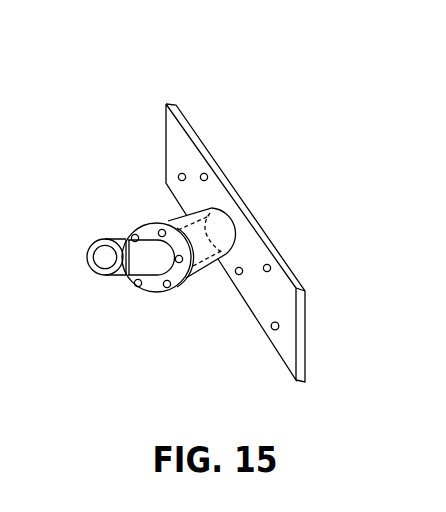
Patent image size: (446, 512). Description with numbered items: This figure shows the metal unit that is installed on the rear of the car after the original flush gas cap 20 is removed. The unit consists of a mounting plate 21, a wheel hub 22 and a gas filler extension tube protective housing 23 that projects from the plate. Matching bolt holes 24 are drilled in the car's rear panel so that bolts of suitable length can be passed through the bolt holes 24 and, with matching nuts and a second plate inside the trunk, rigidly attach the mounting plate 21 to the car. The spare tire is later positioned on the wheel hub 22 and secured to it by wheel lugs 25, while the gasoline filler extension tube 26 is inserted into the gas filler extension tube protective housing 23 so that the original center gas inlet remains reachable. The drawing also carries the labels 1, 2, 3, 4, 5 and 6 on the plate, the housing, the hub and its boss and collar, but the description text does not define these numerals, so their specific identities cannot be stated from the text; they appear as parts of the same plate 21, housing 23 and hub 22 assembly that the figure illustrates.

The support bracket plate 1 is at (235, 221).
The mounting hole 2 is at (267, 264).
The tubular sleeve 3 is at (205, 268).
The hub 4 is at (153, 262).
The collar 5 is at (131, 268).
The flange 6 is at (145, 224).
The gas cap 20 is at (98, 259).
The mounting plate 21 is at (250, 243).
The wheel hub 22 is at (144, 228).
The gas filler extension tube protective housing 23 is at (220, 264).
The bolt holes 24 is at (279, 324).
The wheel lugs 25 is at (138, 287).
The gasoline filler extension tube 26 is at (167, 288).